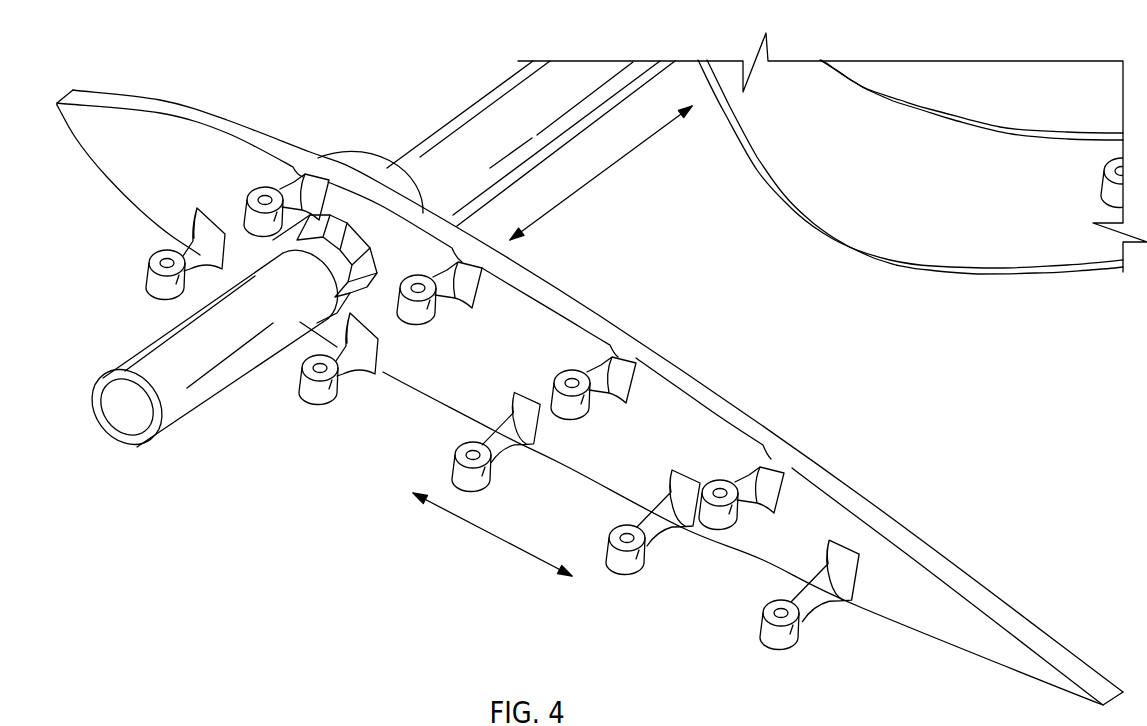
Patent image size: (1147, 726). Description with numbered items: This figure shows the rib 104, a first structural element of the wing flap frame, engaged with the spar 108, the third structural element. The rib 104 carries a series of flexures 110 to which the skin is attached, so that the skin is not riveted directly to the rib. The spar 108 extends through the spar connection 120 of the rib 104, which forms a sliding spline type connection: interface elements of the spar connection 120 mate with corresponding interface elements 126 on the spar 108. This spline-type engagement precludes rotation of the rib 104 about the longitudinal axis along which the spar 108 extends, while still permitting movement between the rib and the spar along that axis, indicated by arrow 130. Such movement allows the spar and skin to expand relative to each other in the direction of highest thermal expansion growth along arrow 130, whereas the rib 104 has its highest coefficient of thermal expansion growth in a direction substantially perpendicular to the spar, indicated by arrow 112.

The rib 104 is at (167, 100).
The spar 108 is at (168, 400).
The flexures 110 is at (800, 637).
The arrow 112 is at (492, 546).
The spar connection 120 is at (355, 167).
The interface elements 126 is at (348, 352).
The arrow 130 is at (598, 178).